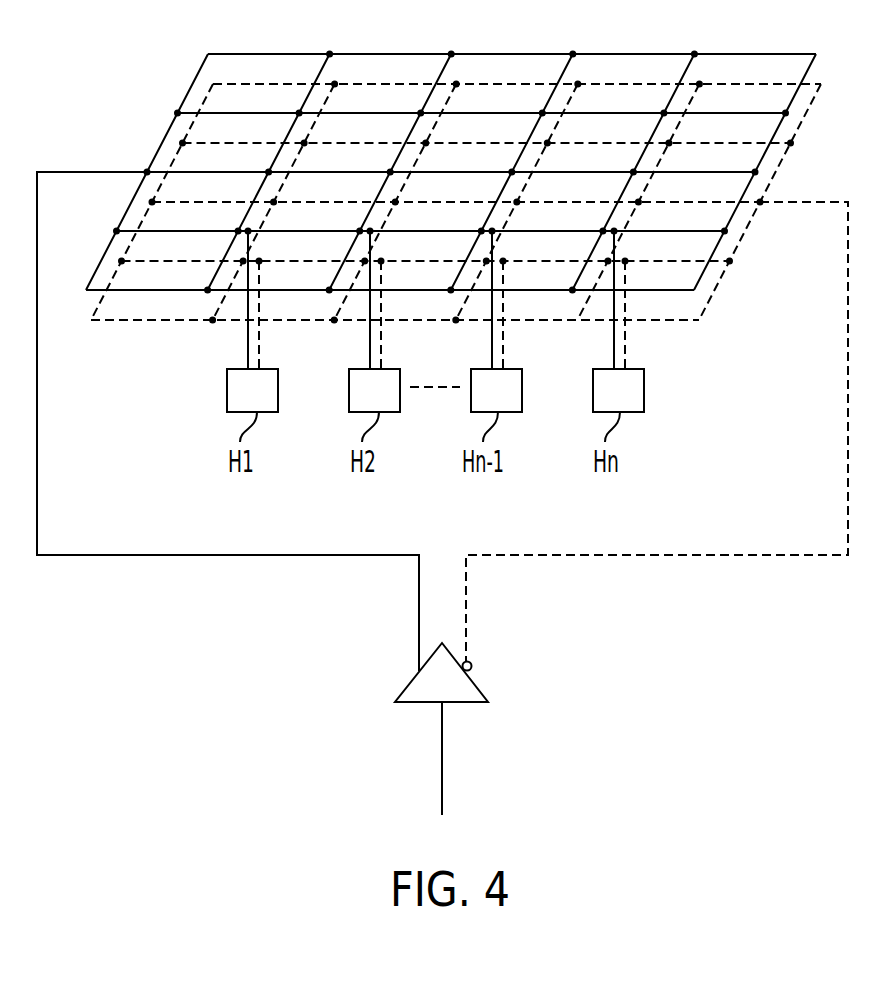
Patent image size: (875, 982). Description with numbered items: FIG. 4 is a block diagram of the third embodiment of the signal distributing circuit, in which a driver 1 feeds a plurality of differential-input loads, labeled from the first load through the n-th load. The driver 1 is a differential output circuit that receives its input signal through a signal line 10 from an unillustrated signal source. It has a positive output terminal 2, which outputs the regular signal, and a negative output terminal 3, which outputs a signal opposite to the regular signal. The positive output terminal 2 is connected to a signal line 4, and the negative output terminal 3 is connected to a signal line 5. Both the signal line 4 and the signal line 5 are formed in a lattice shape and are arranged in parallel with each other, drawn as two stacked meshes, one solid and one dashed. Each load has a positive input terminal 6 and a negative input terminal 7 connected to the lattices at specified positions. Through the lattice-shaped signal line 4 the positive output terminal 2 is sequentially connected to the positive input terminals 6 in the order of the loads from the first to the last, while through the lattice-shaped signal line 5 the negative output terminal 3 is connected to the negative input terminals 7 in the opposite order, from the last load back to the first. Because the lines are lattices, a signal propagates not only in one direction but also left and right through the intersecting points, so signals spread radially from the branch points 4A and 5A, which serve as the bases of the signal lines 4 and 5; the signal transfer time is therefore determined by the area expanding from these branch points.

The driver 1 is at (490, 702).
The positive output terminal 2 is at (418, 668).
The negative output terminal 3 is at (472, 661).
The signal line 4 is at (250, 555).
The signal line 5 is at (730, 557).
The branch point 4A is at (147, 172).
The branch point 5A is at (760, 202).
The positive input terminal 6 is at (612, 368).
The negative input terminal 7 is at (659, 345).
The signal line 10 is at (442, 780).